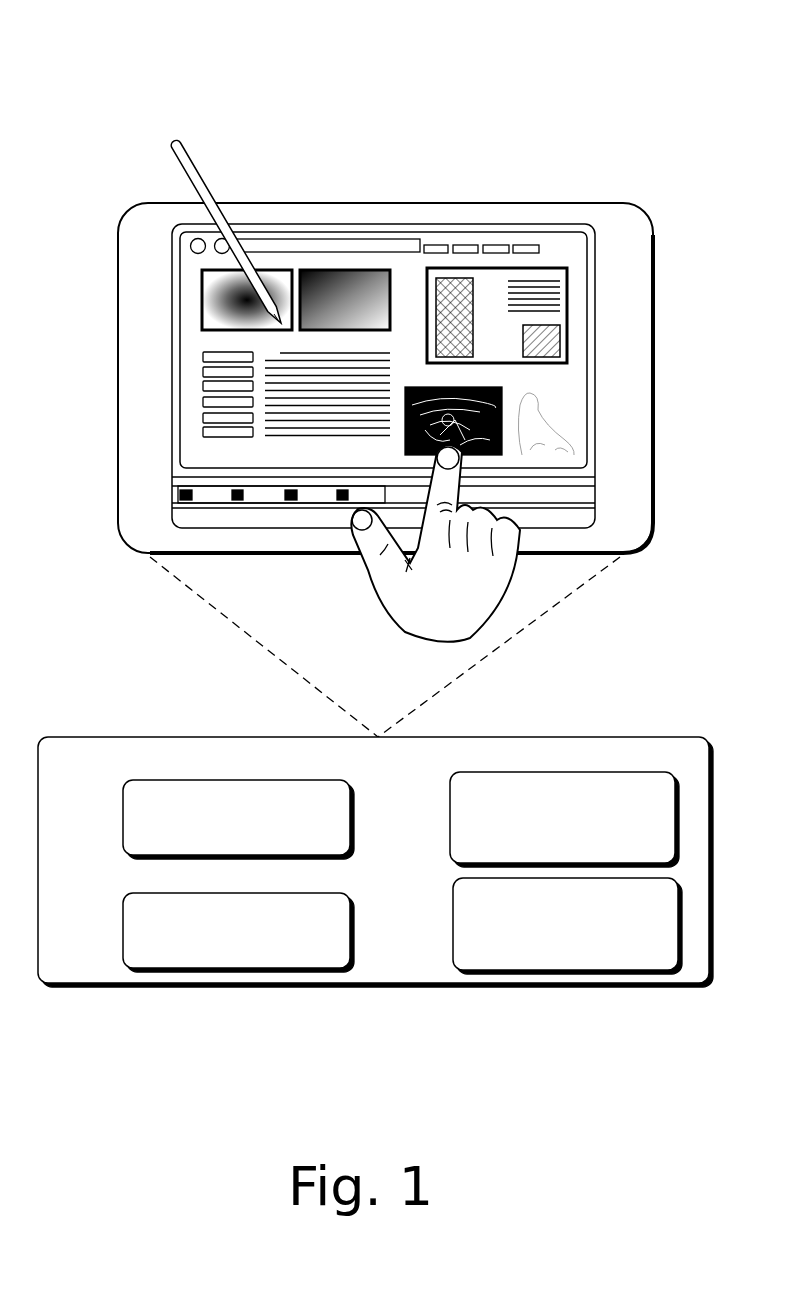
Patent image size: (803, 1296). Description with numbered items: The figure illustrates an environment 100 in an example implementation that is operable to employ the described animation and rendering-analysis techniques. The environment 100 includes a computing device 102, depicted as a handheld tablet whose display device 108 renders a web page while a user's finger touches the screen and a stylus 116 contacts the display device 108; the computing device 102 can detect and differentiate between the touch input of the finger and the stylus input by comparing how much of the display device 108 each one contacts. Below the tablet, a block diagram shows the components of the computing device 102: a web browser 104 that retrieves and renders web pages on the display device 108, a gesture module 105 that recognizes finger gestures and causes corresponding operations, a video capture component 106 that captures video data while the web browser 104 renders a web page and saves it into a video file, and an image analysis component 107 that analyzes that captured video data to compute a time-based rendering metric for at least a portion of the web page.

The environment 100 is at (611, 81).
The computing device 102 is at (477, 766).
The web browser 104 is at (221, 833).
The gesture module 105 is at (221, 946).
The video capture component 106 is at (547, 847).
The image analysis component 107 is at (551, 955).
The display device 108 is at (584, 258).
The stylus 116 is at (181, 134).